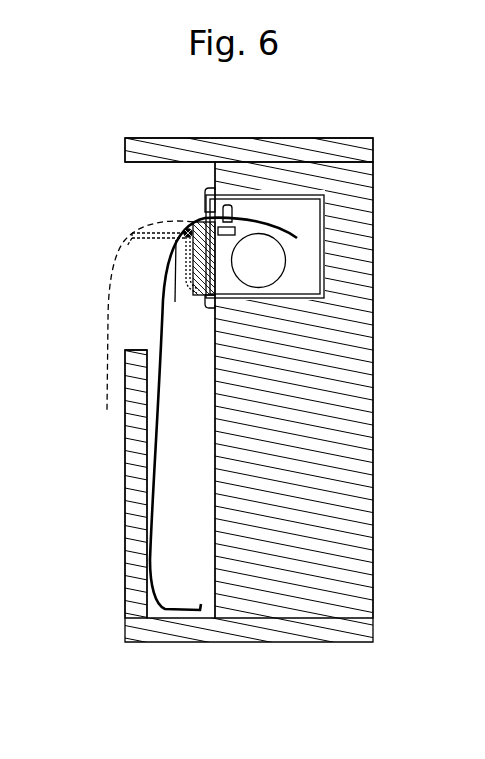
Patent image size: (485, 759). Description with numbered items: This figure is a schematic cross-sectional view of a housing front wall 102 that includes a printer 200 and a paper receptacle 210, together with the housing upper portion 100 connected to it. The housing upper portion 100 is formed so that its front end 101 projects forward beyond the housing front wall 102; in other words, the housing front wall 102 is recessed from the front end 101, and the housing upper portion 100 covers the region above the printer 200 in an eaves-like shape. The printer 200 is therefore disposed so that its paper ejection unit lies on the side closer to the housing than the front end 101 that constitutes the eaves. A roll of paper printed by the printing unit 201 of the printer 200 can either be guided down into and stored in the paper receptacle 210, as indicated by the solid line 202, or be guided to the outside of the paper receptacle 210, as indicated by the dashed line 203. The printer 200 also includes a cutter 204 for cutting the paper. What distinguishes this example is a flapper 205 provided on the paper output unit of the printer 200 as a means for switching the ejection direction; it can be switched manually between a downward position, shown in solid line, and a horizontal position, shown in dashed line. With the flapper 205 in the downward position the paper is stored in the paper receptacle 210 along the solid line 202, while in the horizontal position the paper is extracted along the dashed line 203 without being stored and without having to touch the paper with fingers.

The housing upper portion 100 is at (247, 142).
The front end 101 is at (124, 150).
The housing front wall 102 is at (357, 508).
The printer 200 is at (303, 233).
The printing unit 201 is at (238, 205).
The solid line 202 is at (163, 307).
The dashed line 203 is at (110, 290).
The cutter 204 is at (207, 216).
The flapper 205 is at (186, 280).
The paper receptacle 210 is at (125, 523).